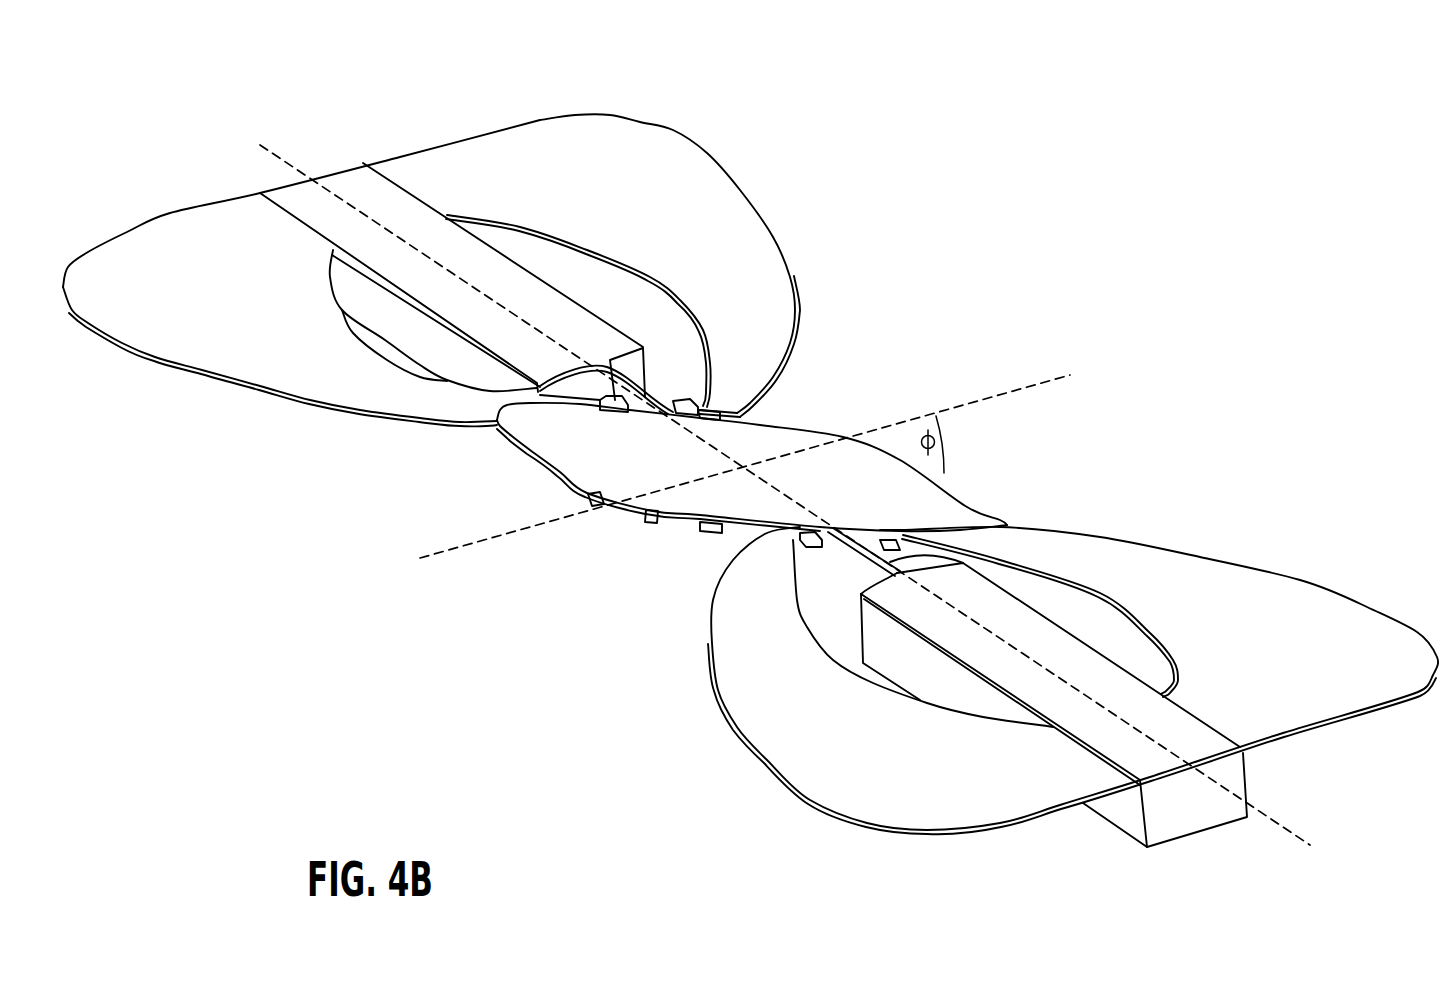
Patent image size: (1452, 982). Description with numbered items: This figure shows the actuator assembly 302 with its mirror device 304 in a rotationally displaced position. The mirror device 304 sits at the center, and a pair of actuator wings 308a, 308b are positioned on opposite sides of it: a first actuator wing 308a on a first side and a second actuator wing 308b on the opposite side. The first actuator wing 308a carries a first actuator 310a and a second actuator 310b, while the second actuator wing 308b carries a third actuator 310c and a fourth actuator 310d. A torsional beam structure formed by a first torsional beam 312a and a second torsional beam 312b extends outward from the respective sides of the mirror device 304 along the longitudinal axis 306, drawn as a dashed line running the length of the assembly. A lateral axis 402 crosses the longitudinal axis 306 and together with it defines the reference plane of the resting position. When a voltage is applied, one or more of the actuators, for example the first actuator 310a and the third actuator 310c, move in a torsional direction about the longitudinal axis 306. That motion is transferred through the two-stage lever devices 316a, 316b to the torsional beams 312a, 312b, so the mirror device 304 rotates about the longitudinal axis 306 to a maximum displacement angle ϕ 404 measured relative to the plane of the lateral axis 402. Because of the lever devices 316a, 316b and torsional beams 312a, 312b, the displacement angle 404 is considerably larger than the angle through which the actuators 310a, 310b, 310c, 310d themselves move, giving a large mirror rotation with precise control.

The actuator assembly 302 is at (750, 459).
The mirror device 304 is at (505, 436).
The longitudinal axis 306 is at (1280, 822).
The first actuator wing 308a is at (686, 469).
The second actuator wing 308b is at (1073, 680).
The first actuator 310a is at (610, 191).
The second actuator 310b is at (222, 308).
The third actuator 310c is at (1302, 661).
The fourth actuator 310d is at (913, 781).
The first torsional beam 312a is at (627, 400).
The second torsional beam 312b is at (933, 588).
The lever device 316a is at (676, 375).
The lever device 316b is at (828, 560).
The lateral axis 402 is at (1035, 383).
The displacement angle 404 is at (944, 447).